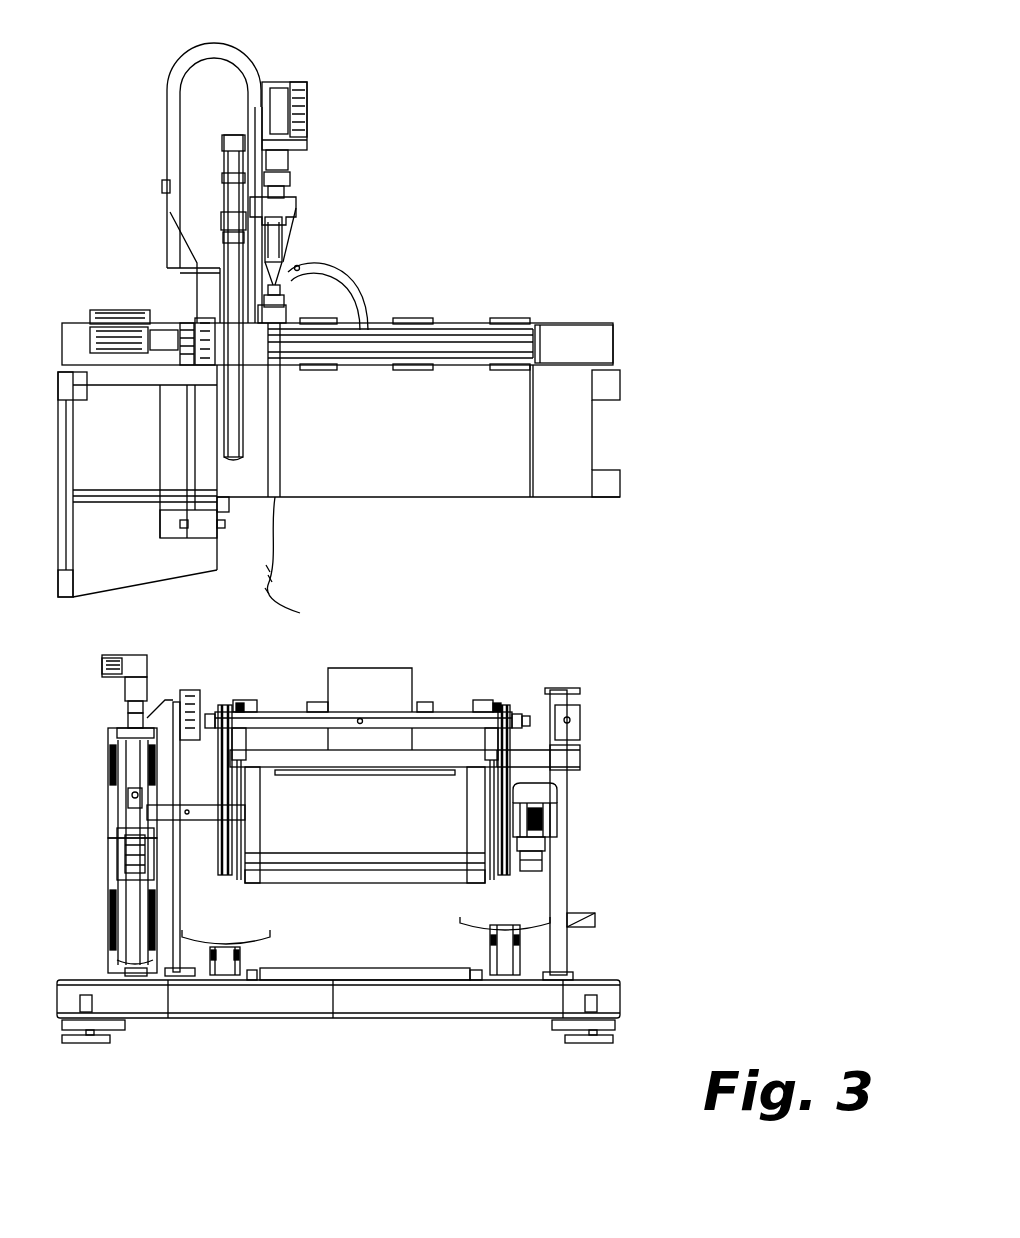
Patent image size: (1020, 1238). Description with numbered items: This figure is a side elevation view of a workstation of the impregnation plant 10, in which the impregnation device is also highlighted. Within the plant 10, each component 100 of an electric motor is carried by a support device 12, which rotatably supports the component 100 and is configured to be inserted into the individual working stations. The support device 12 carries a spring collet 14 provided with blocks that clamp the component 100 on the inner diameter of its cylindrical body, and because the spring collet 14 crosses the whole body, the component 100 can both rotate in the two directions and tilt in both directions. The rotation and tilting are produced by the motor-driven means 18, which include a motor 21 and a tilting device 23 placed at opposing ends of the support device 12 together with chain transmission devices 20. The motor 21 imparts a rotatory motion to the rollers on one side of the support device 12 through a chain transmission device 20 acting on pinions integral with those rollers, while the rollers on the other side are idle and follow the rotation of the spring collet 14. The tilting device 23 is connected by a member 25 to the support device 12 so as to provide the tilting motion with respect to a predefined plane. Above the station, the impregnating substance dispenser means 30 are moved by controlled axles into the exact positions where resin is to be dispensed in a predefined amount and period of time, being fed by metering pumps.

The impregnation plant 10 is at (630, 627).
The support device 12 is at (280, 718).
The spring collet 14 is at (457, 703).
The motor-driven means 18 is at (108, 817).
The chain transmission device 20 is at (222, 873).
The motor 21 is at (537, 870).
The tilting device 23 is at (108, 903).
The member 25 is at (213, 825).
The impregnating substance dispenser means 30 is at (282, 437).
The component 100 is at (367, 677).